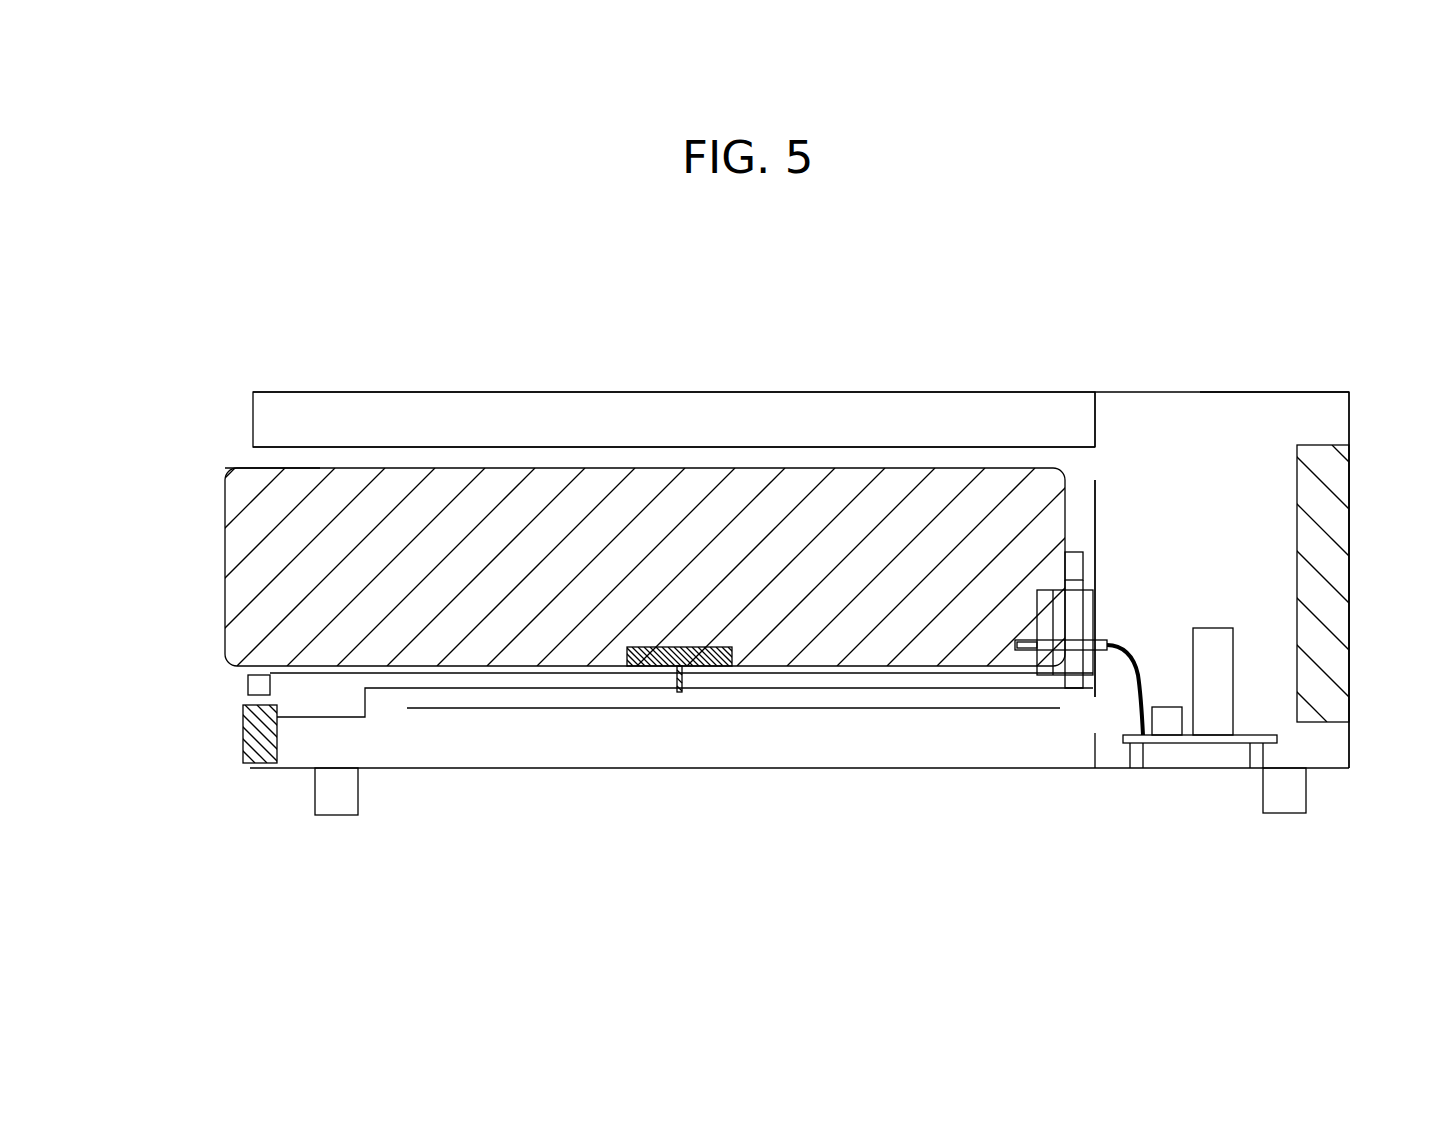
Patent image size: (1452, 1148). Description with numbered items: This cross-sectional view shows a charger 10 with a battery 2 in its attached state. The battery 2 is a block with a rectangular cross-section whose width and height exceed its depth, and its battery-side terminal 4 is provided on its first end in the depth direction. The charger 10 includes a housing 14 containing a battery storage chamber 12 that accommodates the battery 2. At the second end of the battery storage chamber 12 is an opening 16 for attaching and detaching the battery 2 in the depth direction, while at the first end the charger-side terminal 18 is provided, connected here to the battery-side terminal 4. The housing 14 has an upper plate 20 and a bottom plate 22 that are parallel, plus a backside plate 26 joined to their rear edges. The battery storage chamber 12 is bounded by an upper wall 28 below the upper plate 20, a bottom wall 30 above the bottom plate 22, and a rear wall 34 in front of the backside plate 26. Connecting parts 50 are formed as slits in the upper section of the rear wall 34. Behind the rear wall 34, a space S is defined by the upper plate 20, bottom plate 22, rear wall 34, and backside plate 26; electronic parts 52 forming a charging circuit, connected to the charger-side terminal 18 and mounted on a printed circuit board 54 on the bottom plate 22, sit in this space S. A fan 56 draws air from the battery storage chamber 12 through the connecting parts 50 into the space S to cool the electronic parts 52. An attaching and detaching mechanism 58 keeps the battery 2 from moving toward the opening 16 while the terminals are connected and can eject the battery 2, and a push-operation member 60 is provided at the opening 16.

The charger 10 is at (1030, 152).
The battery 2 is at (243, 595).
The battery-side terminal 4 is at (1013, 647).
The battery storage chamber 12 is at (358, 455).
The housing 14 is at (795, 378).
The opening 16 is at (250, 457).
The charger-side terminal 18 is at (1068, 650).
The upper plate 20 is at (463, 392).
The bottom plate 22 is at (533, 770).
The backside plate 26 is at (1350, 413).
The upper wall 28 is at (895, 448).
The bottom wall 30 is at (593, 675).
The rear wall 34 is at (1098, 512).
The connecting part 50 is at (1088, 470).
The electronic parts 52 is at (1160, 712).
The circuit board 54 is at (1210, 737).
The fan 56 is at (1338, 699).
The attaching and detaching mechanism 58 is at (652, 647).
The push-operation member 60 is at (243, 748).
The space S is at (1260, 512).